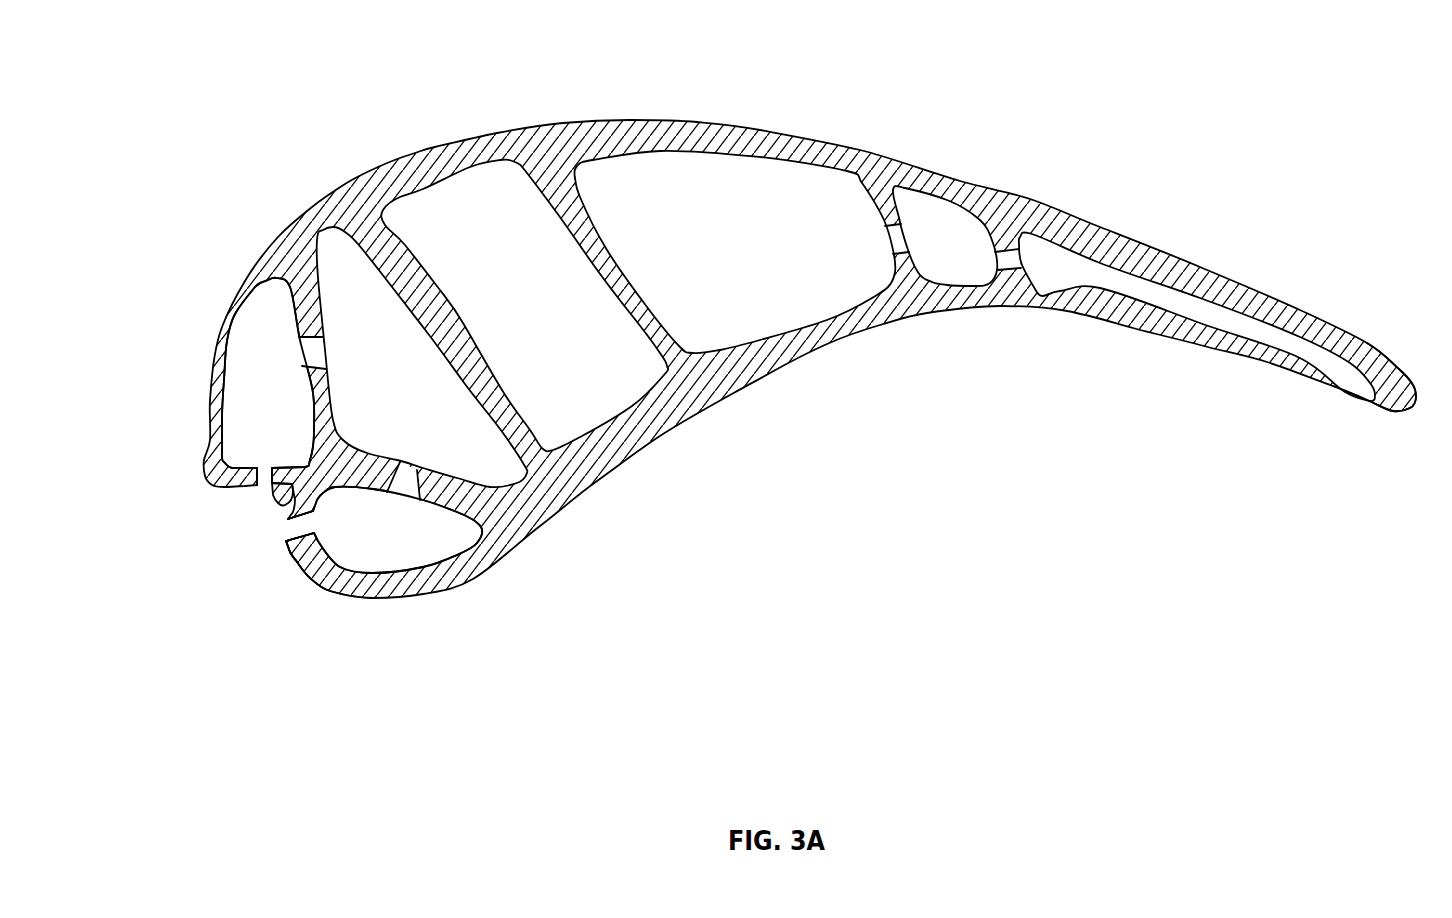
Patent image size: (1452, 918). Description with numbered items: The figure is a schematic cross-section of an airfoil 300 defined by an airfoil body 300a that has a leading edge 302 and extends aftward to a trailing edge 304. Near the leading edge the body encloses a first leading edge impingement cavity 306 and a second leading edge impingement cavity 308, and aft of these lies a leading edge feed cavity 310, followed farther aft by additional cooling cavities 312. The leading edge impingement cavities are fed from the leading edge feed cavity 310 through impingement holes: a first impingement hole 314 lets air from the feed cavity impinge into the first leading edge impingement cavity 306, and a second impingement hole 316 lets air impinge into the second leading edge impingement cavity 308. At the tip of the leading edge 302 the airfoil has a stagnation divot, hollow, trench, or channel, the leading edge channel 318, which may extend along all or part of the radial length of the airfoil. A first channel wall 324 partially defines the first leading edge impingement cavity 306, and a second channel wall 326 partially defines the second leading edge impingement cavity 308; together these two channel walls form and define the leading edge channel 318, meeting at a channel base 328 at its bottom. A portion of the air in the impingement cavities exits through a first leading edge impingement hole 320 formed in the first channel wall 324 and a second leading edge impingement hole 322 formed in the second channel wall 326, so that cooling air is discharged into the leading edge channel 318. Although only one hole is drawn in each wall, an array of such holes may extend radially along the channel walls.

The airfoil 300 is at (1290, 80).
The airfoil body 300a is at (1008, 202).
The leading edge 302 is at (307, 580).
The trailing edge 304 is at (1401, 379).
The first leading edge impingement cavity 306 is at (411, 550).
The second leading edge impingement cavity 308 is at (284, 388).
The leading edge feed cavity 310 is at (426, 393).
The cooling cavities 312 is at (548, 304).
The first impingement hole 314 is at (329, 344).
The second impingement hole 316 is at (413, 461).
The leading edge channel 318 is at (244, 524).
The first leading edge impingement hole 320 is at (283, 527).
The second leading edge impingement hole 322 is at (263, 493).
The first channel wall 324 is at (285, 544).
The second channel wall 326 is at (224, 492).
The channel base 328 is at (274, 483).